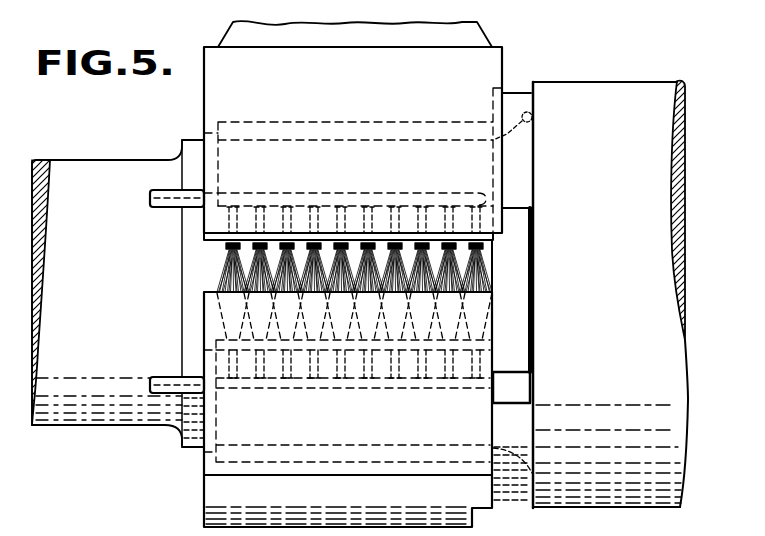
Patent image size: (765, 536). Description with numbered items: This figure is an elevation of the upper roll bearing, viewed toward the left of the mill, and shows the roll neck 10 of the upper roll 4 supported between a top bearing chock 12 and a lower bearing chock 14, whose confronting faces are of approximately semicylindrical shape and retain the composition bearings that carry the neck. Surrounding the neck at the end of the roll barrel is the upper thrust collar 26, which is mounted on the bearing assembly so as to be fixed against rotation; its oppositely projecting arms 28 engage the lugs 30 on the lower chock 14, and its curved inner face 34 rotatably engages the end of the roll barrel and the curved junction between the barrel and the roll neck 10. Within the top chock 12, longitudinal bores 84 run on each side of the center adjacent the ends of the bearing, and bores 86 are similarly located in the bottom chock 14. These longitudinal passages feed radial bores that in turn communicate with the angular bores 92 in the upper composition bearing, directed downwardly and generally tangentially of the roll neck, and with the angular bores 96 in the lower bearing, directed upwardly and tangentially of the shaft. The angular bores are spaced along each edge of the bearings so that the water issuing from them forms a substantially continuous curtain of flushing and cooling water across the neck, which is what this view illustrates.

The upper roll 4 is at (657, 232).
The roll neck 10 is at (193, 153).
The top bearing chock 12 is at (218, 95).
The lower bearing chock 14 is at (223, 490).
The upper thrust collar 26 is at (513, 102).
The arms 28 is at (517, 237).
The lugs 30 is at (517, 385).
The curved inner face 34 is at (532, 113).
The longitudinal bores 84 is at (246, 199).
The bores 86 is at (263, 387).
The angular bores 92 is at (420, 217).
The angular bores 96 is at (340, 365).